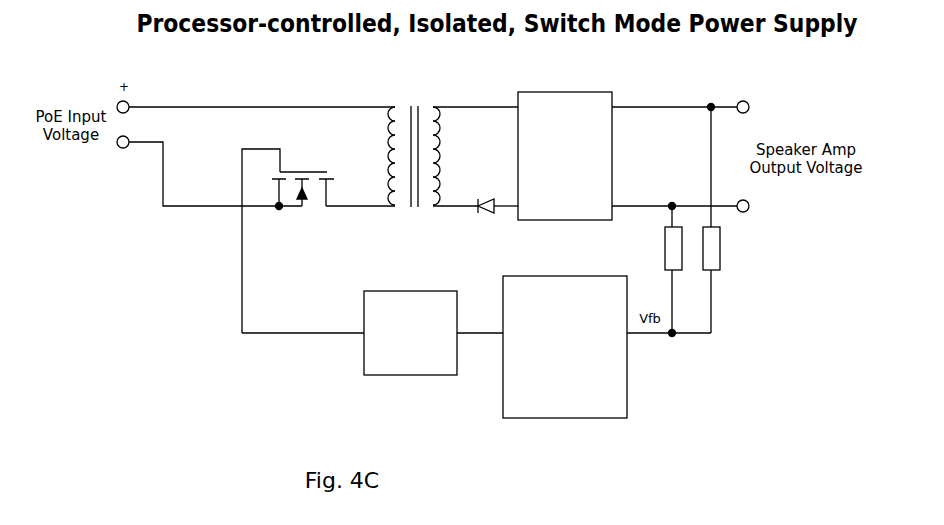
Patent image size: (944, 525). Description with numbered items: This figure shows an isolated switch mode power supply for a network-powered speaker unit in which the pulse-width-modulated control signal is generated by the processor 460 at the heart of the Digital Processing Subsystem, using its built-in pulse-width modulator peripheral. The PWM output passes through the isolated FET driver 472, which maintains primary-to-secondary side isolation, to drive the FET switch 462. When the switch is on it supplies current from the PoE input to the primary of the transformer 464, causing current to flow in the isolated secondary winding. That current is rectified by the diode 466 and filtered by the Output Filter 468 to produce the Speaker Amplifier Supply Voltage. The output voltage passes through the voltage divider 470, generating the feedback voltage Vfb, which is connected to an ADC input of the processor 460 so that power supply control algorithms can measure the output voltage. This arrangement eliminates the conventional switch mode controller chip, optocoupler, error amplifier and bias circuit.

The processor 460 is at (565, 334).
The FET switch 462 is at (308, 176).
The transformer 464 is at (414, 139).
The diode 466 is at (483, 192).
The Output Filter 468 is at (565, 142).
The voltage divider 470 is at (721, 220).
The isolated FET driver 472 is at (410, 316).